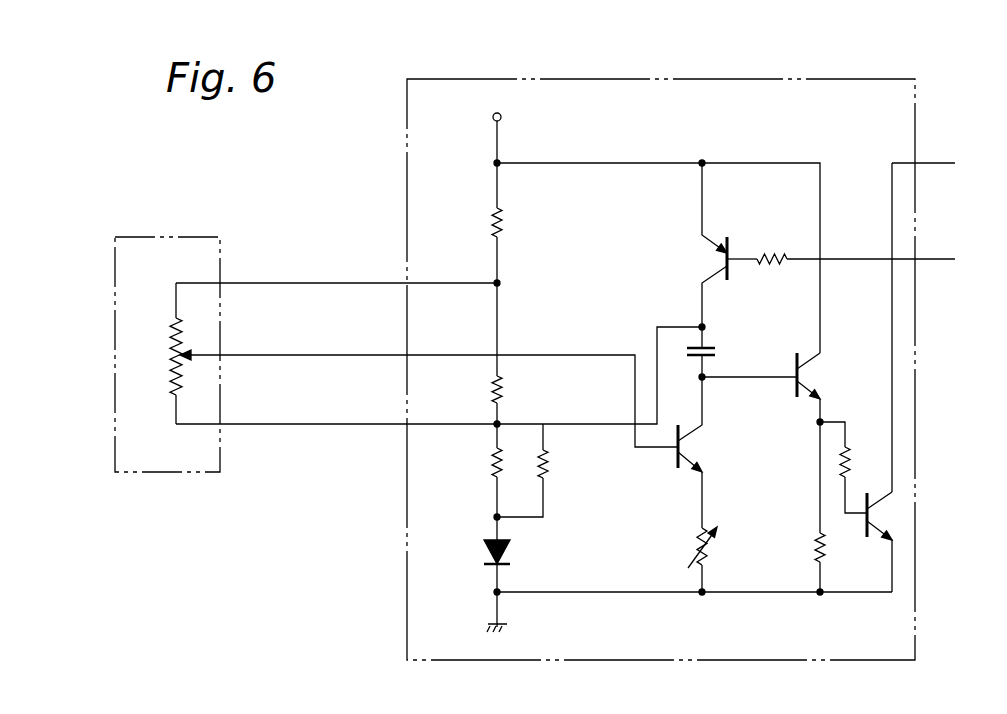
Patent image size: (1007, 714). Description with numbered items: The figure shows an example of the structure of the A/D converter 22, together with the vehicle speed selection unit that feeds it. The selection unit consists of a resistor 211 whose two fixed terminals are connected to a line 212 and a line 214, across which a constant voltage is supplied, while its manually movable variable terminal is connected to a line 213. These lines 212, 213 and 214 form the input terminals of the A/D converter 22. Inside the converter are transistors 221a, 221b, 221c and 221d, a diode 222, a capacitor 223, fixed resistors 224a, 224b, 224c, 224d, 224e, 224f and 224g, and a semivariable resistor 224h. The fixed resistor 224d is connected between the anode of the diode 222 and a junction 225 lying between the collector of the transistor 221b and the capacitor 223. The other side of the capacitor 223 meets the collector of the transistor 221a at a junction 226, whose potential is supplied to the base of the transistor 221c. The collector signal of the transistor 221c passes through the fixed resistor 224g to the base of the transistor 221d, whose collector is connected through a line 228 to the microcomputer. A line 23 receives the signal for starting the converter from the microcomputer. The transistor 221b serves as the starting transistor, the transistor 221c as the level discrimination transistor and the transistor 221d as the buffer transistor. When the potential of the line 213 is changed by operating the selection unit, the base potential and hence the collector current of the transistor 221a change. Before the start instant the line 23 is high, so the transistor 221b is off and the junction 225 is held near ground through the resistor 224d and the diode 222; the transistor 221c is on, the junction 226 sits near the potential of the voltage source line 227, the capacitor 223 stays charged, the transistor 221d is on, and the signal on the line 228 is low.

The A/D converter 22 is at (558, 82).
The resistor 211 is at (171, 346).
The line 212 is at (270, 283).
The line 213 is at (273, 355).
The line 214 is at (278, 427).
The transistor 221a is at (677, 466).
The transistor 221b is at (732, 242).
The transistor 221c is at (818, 386).
The transistor 221d is at (861, 540).
The diode 222 is at (488, 536).
The capacitor 223 is at (710, 350).
The fixed resistor 224a is at (505, 217).
The fixed resistor 224b is at (491, 392).
The fixed resistor 224c is at (489, 460).
The fixed resistor 224d is at (552, 470).
The fixed resistor 224e is at (760, 258).
The fixed resistor 224f is at (816, 552).
The fixed resistor 224g is at (852, 448).
The semivariable resistor 224h is at (716, 543).
The junction 225 is at (700, 326).
The junction 226 is at (705, 380).
The voltage source line 227 is at (616, 160).
The line 228 is at (946, 160).
The line 23 is at (942, 257).